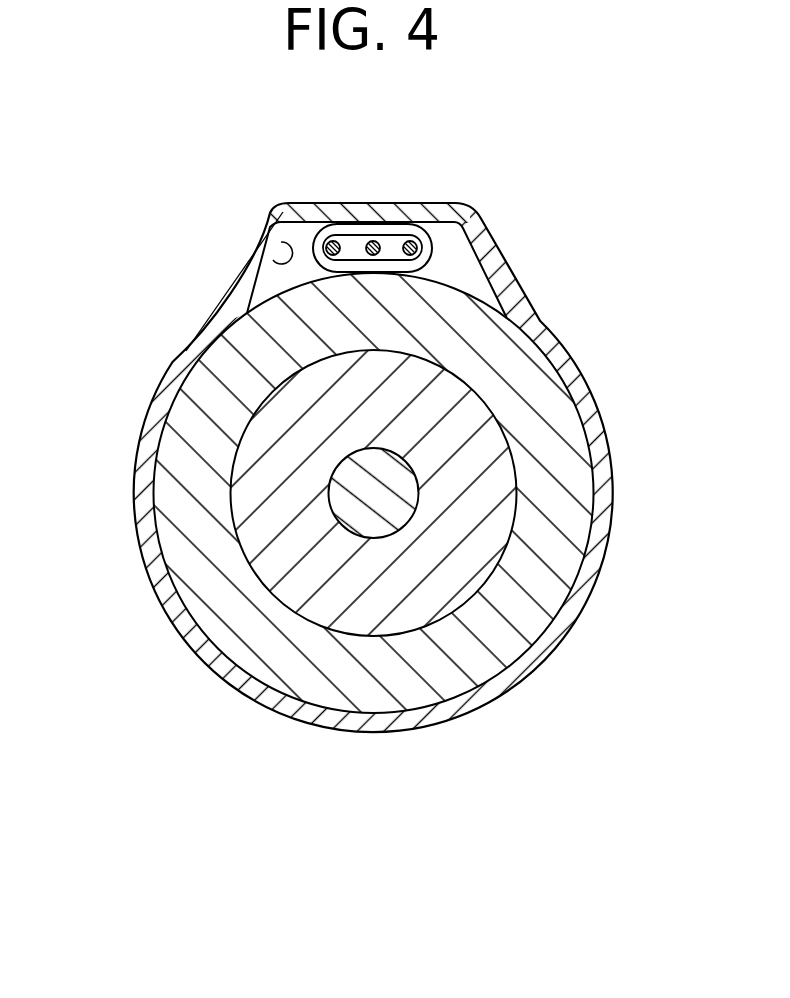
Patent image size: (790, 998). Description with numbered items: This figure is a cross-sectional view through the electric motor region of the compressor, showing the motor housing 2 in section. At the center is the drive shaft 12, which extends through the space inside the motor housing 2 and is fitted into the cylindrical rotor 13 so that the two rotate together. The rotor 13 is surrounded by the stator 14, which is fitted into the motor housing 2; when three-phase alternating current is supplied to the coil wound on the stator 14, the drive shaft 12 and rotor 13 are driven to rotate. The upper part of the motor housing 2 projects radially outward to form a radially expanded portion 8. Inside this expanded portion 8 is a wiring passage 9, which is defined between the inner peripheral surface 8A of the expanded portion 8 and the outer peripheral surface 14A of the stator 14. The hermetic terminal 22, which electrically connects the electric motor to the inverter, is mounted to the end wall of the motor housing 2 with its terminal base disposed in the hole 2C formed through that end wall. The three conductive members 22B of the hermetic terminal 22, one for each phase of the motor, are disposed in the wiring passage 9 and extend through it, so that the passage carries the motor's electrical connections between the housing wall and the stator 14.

The motor housing 2 is at (153, 396).
The hole 2C is at (330, 238).
The radially expanded portion 8 is at (267, 217).
The inner peripheral surface 8A is at (262, 272).
The wiring passage 9 is at (465, 240).
The drive shaft 12 is at (341, 530).
The rotor 13 is at (470, 600).
The stator 14 is at (572, 353).
The outer peripheral surface 14A is at (452, 282).
The hermetic terminal 22 is at (408, 240).
The conductive members 22B is at (334, 240).